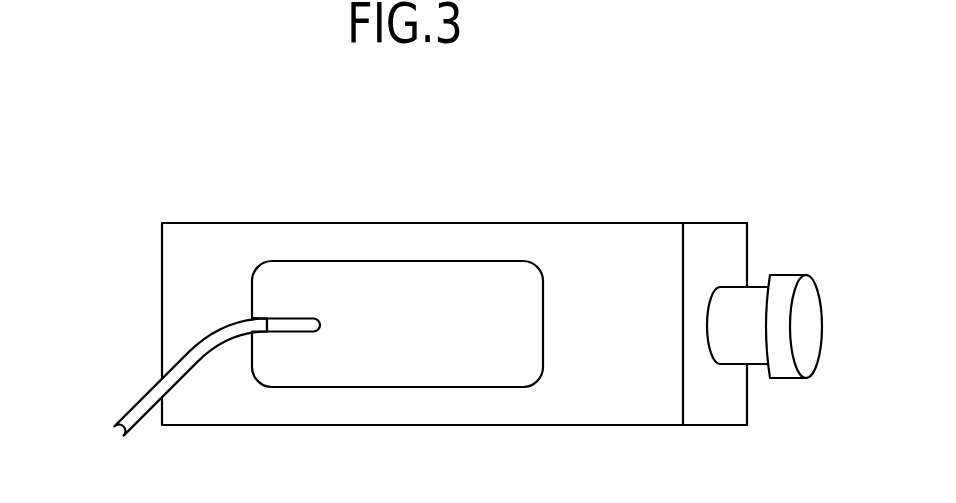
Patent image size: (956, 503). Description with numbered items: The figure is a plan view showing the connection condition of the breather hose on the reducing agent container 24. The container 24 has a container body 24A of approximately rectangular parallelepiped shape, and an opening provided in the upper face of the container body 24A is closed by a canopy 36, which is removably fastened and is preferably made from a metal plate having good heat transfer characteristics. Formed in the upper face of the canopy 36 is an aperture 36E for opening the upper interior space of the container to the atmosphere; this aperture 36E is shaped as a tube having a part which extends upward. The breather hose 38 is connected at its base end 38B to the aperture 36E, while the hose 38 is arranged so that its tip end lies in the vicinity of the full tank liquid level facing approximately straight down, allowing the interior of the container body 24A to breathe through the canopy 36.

The reducing agent container 24 is at (692, 214).
The container body 24A is at (584, 197).
The canopy 36 is at (551, 323).
The aperture 36E is at (317, 325).
The breather hose 38 is at (149, 389).
The base end of breather hose 38B is at (251, 317).